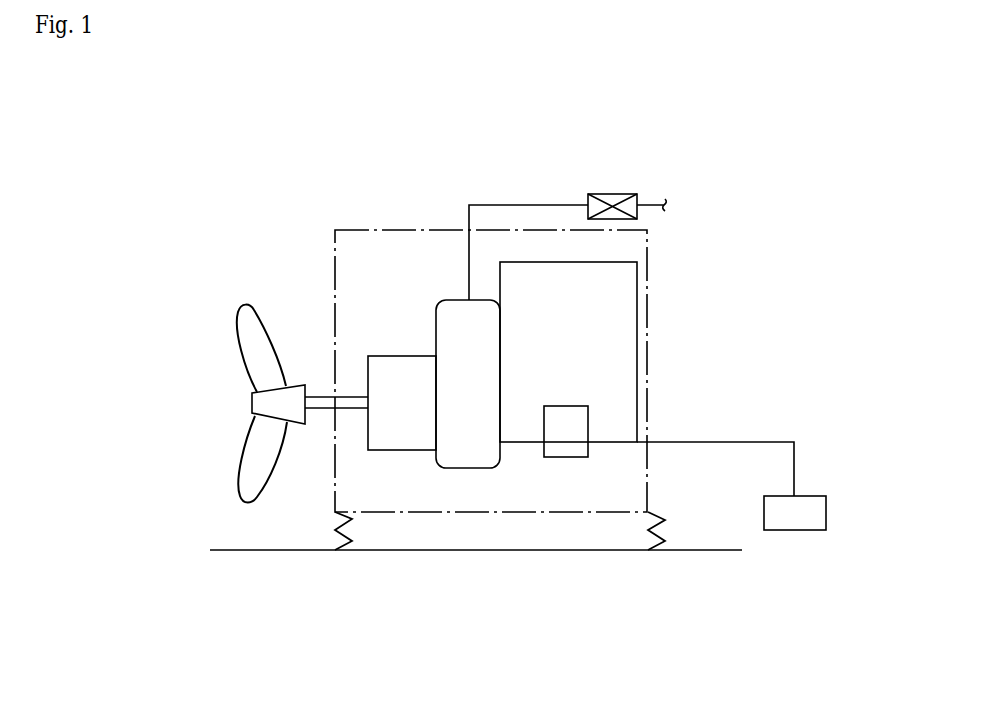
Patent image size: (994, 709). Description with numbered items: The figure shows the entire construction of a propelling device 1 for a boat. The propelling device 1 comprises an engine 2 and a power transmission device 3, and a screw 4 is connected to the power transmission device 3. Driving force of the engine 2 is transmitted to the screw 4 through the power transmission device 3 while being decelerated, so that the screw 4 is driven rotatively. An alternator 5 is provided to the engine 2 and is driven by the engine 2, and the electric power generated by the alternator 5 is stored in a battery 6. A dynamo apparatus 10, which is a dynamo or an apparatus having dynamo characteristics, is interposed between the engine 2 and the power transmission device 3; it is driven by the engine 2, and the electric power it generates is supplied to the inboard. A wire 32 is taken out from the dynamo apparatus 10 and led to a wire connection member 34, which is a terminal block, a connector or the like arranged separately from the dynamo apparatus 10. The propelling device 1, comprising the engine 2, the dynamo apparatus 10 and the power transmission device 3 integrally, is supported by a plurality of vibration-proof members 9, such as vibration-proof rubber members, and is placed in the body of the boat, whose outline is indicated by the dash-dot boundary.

The propelling device 1 is at (408, 212).
The engine 2 is at (552, 326).
The power transmission device 3 is at (388, 416).
The screw 4 is at (250, 432).
The alternator 5 is at (552, 445).
The battery 6 is at (731, 486).
The vibration-proof members 9 is at (350, 542).
The dynamo apparatus 10 is at (453, 372).
The wire 32 is at (488, 203).
The wire connection member 34 is at (612, 193).